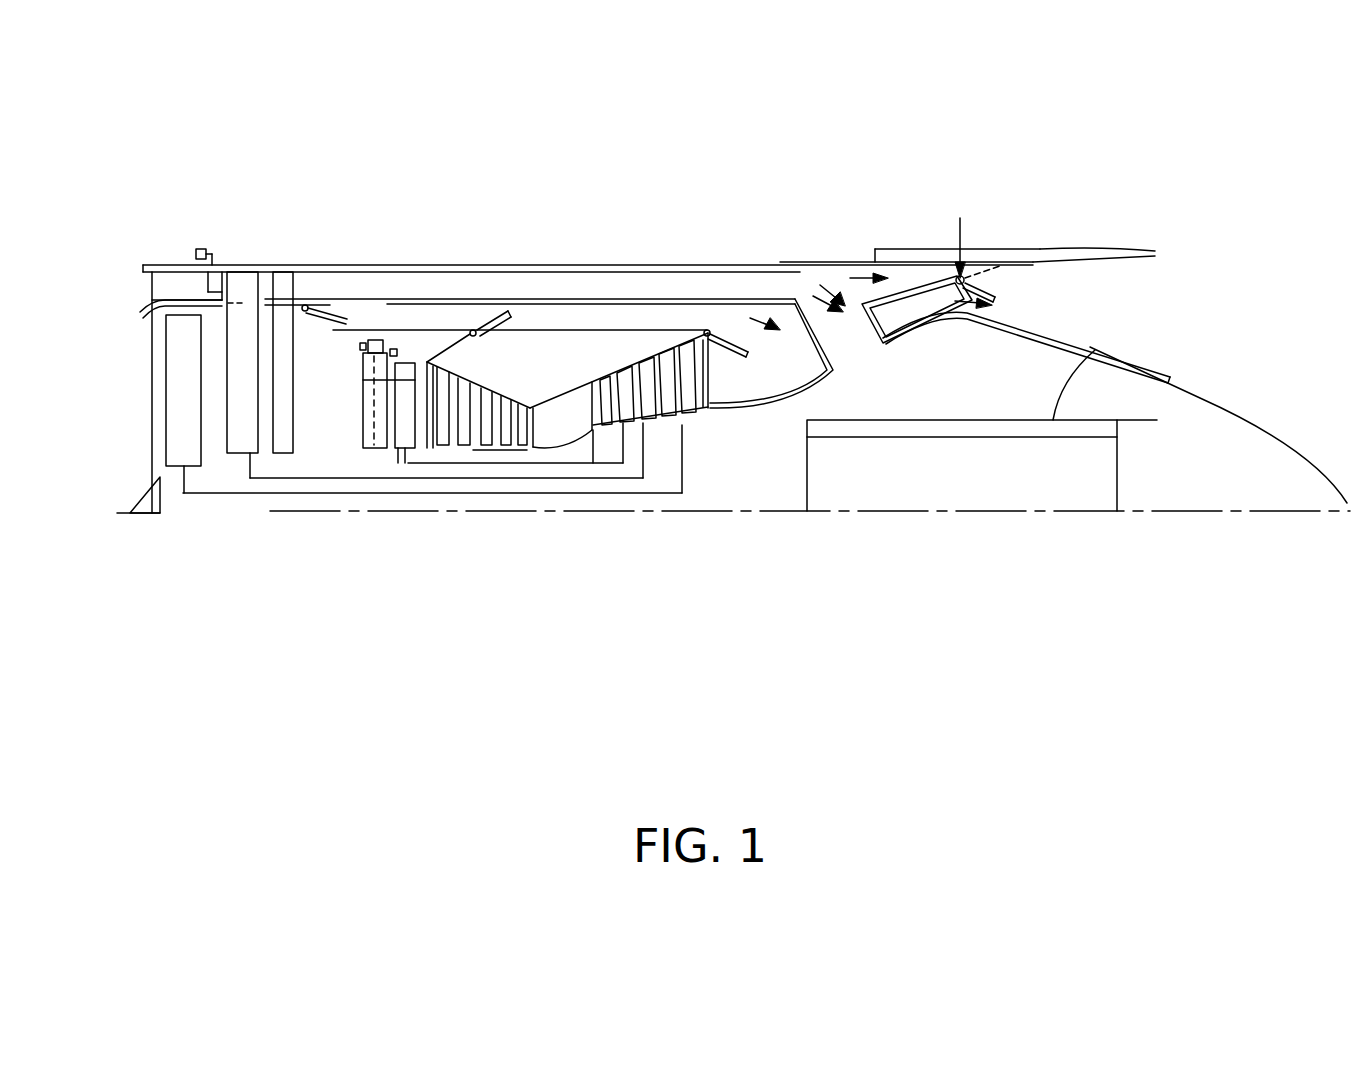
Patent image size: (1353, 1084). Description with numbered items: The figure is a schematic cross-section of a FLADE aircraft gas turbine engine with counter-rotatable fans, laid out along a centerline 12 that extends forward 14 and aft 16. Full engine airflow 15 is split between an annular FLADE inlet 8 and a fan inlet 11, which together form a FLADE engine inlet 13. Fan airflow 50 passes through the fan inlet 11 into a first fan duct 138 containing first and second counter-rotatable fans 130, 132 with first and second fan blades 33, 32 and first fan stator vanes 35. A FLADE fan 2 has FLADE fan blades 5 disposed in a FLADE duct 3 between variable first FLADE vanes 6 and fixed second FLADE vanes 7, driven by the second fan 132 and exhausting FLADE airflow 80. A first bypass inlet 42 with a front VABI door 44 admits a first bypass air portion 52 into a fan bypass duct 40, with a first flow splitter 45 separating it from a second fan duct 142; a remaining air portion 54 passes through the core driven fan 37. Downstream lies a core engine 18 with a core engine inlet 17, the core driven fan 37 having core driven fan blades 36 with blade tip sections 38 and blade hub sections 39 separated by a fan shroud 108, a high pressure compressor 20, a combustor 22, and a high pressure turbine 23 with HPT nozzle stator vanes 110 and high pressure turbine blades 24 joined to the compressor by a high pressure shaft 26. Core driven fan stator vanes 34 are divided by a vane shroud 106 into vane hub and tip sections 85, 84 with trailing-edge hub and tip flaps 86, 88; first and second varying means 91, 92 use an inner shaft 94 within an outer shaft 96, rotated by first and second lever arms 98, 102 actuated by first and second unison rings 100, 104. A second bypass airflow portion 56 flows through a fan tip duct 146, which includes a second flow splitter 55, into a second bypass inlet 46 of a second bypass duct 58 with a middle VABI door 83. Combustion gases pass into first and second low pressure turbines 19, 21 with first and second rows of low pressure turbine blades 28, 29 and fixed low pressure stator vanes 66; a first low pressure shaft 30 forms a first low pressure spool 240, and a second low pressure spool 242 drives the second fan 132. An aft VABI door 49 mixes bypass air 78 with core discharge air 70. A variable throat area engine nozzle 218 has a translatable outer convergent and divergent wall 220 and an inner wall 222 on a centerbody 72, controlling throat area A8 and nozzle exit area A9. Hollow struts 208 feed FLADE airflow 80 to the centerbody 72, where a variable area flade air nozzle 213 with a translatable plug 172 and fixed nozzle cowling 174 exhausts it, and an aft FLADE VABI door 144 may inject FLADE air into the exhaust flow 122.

The FLADE fan 2 is at (247, 262).
The FLADE duct 3 is at (493, 300).
The FLADE fan blades 5 is at (232, 263).
The variable first FLADE vanes 6 is at (206, 290).
The fixed second FLADE vanes 7 is at (280, 277).
The FLADE inlet 8 is at (150, 288).
The fan inlet 11 is at (151, 380).
The centerline 12 is at (876, 512).
The FLADE engine inlet 13 is at (140, 316).
The forward 14 is at (285, 585).
The full engine airflow 15 is at (77, 400).
The aft 16 is at (1047, 530).
The core engine inlet 17 is at (417, 430).
The core engine 18 is at (543, 380).
The first low pressure turbine 19 is at (648, 415).
The high pressure compressor 20 is at (495, 455).
The second low pressure turbine 21 is at (690, 418).
The combustor 22 is at (563, 422).
The high pressure turbine 23 is at (604, 440).
The high pressure turbine blades 24 is at (678, 482).
The high pressure shaft 26 is at (403, 430).
The first row of low pressure turbine blades 28 is at (650, 310).
The second row of low pressure turbine blades 29 is at (707, 330).
The first low pressure shaft 30 is at (243, 453).
The second fan blades 32 is at (185, 466).
The first fan blades 33 is at (183, 404).
The core driven fan stator vanes 34 is at (357, 473).
The first fan stator vanes 35 is at (285, 393).
The core driven fan blades 36 is at (370, 470).
The core driven fan 37 is at (388, 457).
The blade tip sections 38 is at (430, 330).
The blade hub sections 39 is at (397, 443).
The fan bypass duct 40 is at (598, 310).
The first bypass inlet 42 is at (355, 322).
The front variable area bypass injector door 44 is at (365, 350).
The first flow splitter 45 is at (363, 340).
The second bypass inlet 46 is at (432, 372).
The aft variable area bypass injector door 49 is at (780, 263).
The fan airflow 50 is at (77, 447).
The first bypass air portion 52 is at (372, 335).
The remaining air portion 54 is at (313, 437).
The second flow splitter 55 is at (340, 402).
The second bypass airflow portion 56 is at (480, 338).
The second bypass duct 58 is at (458, 355).
The low pressure stator vanes 66 is at (670, 418).
The core discharge air 70 is at (700, 373).
The engine nozzle centerbody 72 is at (1005, 320).
The bypass air 78 is at (545, 318).
The FLADE airflow 80 is at (513, 283).
The middle variable area bypass injector door 83 is at (505, 300).
The vane tip sections 84 is at (368, 360).
The vane hub sections 85 is at (382, 420).
The trailing-edge hub flap 86 is at (382, 450).
The trailing-edge tip flap 88 is at (405, 350).
The first varying means 91 is at (378, 322).
The second varying means 92 is at (415, 345).
The inner shaft 94 is at (405, 345).
The outer shaft 96 is at (360, 370).
The first lever arm 98 is at (365, 352).
The first unison ring 100 is at (363, 372).
The second lever arm 102 is at (400, 345).
The second unison ring 104 is at (418, 345).
The vane shroud 106 is at (376, 417).
The fan shroud 108 is at (427, 430).
The high pressure turbine nozzle stator vanes 110 is at (592, 470).
The exhaust flow 122 is at (990, 295).
The first counter-rotatable fan 130 is at (160, 477).
The second counter-rotatable fan 132 is at (235, 453).
The first fan duct 138 is at (217, 337).
The second fan duct 142 is at (368, 360).
The aft FLADE variable area bypass injector door 144 is at (985, 285).
The fan tip duct 146 is at (403, 350).
The axially translatable plug 172 is at (1222, 408).
The fixed nozzle cowling 174 is at (1157, 420).
The hollow struts 208 is at (895, 325).
The variable area flade air nozzle 213 is at (1140, 362).
The variable throat area engine nozzle 218 is at (912, 228).
The outer annular convergent and divergent wall 220 is at (990, 249).
The annular inner wall 222 is at (905, 325).
The first low pressure spool 240 is at (585, 487).
The second low pressure spool 242 is at (663, 495).
The throat area A8 is at (968, 235).
The nozzle exit area A9 is at (1155, 235).